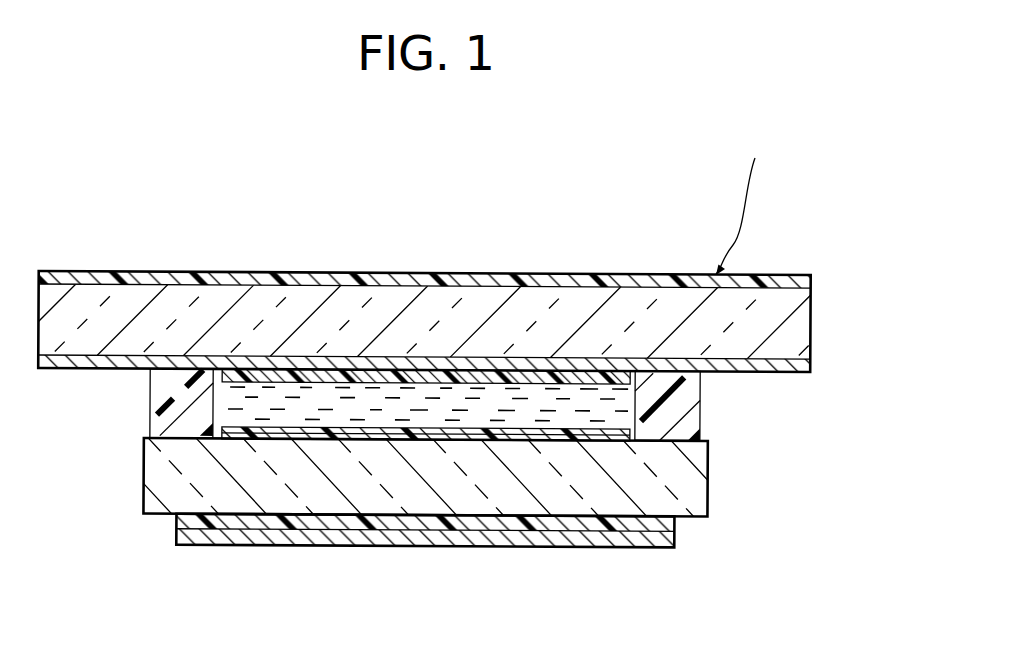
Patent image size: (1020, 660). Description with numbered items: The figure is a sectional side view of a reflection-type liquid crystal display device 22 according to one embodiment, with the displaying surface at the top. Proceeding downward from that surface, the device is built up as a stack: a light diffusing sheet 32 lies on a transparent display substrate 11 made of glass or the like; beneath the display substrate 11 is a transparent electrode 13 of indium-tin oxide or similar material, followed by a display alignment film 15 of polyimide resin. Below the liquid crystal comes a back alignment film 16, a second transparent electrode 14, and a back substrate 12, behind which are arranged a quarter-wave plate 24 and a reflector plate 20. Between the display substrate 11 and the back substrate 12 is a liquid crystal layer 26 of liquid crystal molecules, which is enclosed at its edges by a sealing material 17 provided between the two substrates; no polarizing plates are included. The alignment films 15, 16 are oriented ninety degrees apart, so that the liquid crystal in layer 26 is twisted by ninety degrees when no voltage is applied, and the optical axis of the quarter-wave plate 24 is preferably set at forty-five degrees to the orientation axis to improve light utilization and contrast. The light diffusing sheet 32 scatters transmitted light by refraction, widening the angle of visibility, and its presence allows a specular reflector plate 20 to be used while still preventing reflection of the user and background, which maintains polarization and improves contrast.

The transparent display substrate 11 is at (800, 333).
The back substrate 12 is at (682, 497).
The transparent electrode 13 is at (802, 368).
The transparent electrode 14 is at (580, 445).
The display alignment film 15 is at (703, 382).
The back alignment film 16 is at (637, 433).
The sealing material 17 is at (163, 418).
The reflector plate 20 is at (657, 548).
The liquid crystal display device 22 is at (747, 198).
The quarter-wave plate 24 is at (675, 527).
The liquid crystal layer 26 is at (230, 397).
The light diffusing sheet 32 is at (802, 285).